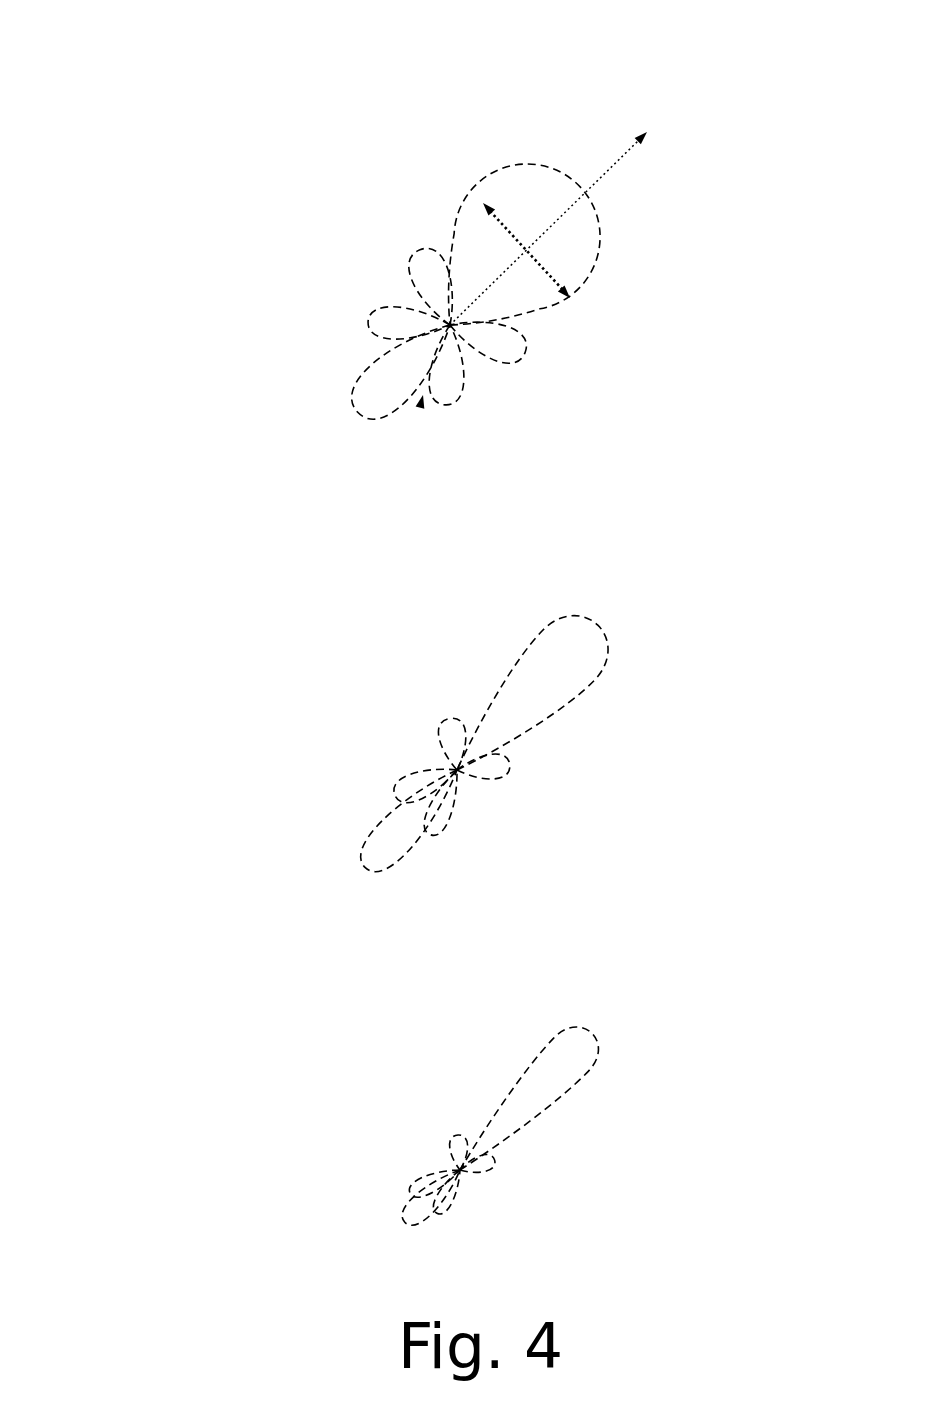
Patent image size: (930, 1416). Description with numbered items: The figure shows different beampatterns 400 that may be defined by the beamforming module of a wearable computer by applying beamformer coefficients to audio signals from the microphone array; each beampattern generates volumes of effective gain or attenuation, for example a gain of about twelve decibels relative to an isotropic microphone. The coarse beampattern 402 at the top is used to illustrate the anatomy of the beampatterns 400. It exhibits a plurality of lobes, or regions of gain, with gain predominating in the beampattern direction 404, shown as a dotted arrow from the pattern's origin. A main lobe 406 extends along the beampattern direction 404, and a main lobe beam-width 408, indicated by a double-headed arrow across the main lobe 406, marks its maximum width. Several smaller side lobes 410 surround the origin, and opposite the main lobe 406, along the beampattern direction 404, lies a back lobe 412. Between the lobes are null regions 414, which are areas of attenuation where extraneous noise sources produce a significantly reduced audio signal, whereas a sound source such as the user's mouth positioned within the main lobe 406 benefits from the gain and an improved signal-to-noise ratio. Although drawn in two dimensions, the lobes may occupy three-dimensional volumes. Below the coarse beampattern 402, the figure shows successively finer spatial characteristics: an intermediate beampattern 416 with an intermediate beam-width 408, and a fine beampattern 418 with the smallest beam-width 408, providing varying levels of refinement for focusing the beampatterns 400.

The beampatterns 400 is at (799, 60).
The coarse beampattern 402 is at (434, 315).
The beampattern direction 404 is at (624, 208).
The main lobe 406 is at (492, 193).
The beam-width 408 is at (504, 226).
The side lobes 410 is at (385, 305).
The back lobe 412 is at (352, 405).
The null region 414 is at (421, 403).
The intermediate beampattern 416 is at (348, 740).
The fine beampattern 418 is at (344, 1123).